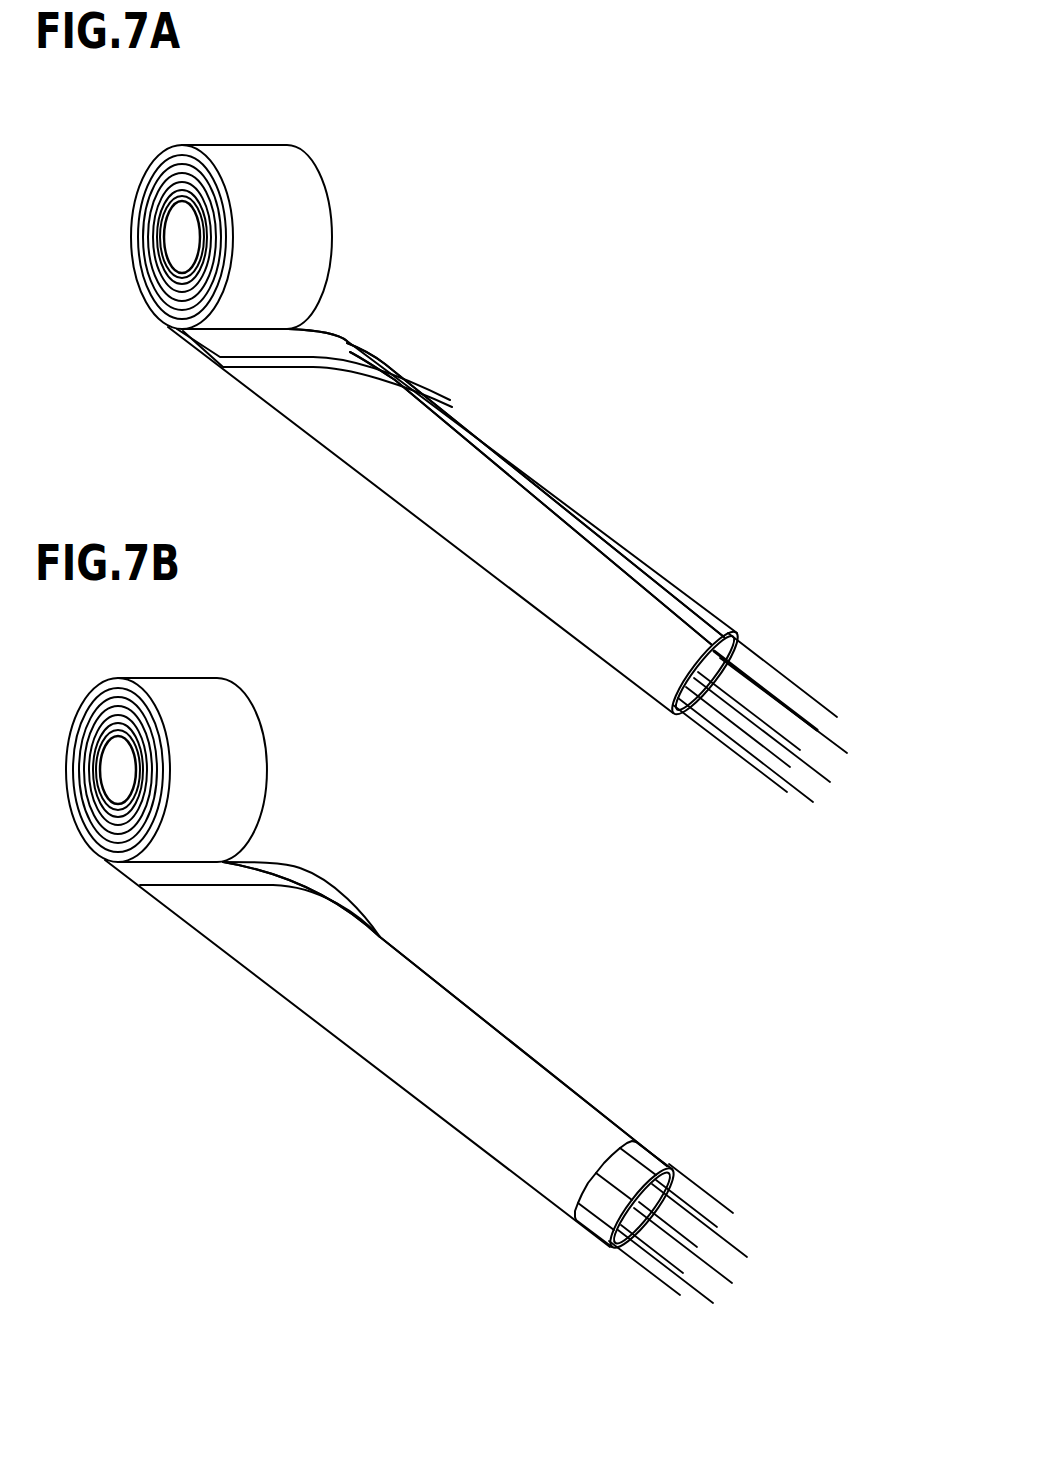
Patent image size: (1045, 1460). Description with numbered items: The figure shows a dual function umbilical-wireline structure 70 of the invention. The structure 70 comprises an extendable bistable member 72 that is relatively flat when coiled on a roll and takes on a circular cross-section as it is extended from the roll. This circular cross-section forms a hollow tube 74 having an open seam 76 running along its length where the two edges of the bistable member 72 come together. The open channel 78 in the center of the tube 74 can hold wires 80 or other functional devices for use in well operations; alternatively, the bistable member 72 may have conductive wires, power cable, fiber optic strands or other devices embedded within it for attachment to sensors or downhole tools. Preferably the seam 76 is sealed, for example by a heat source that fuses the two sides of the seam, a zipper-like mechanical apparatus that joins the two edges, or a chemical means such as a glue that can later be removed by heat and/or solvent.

In FIG. 7A, the dual function umbilical-wireline structure 70 is at (398, 495).
In FIG. 7B, the dual function umbilical-wireline structure 70 is at (335, 1023).
In FIG. 7A, the extendable bistable member 72 is at (347, 340).
In FIG. 7B, the extendable bistable member 72 is at (307, 880).
In FIG. 7A, the hollow tube 74 is at (643, 562).
In FIG. 7B, the hollow tube 74 is at (578, 1093).
In FIG. 7A, the open seam 76 is at (488, 448).
In FIG. 7B, the open seam 76 is at (460, 993).
In FIG. 7A, the open channel 78 is at (713, 660).
In FIG. 7B, the open channel 78 is at (650, 1198).
In FIG. 7A, the wires 80 is at (747, 763).
In FIG. 7B, the wires 80 is at (647, 1273).